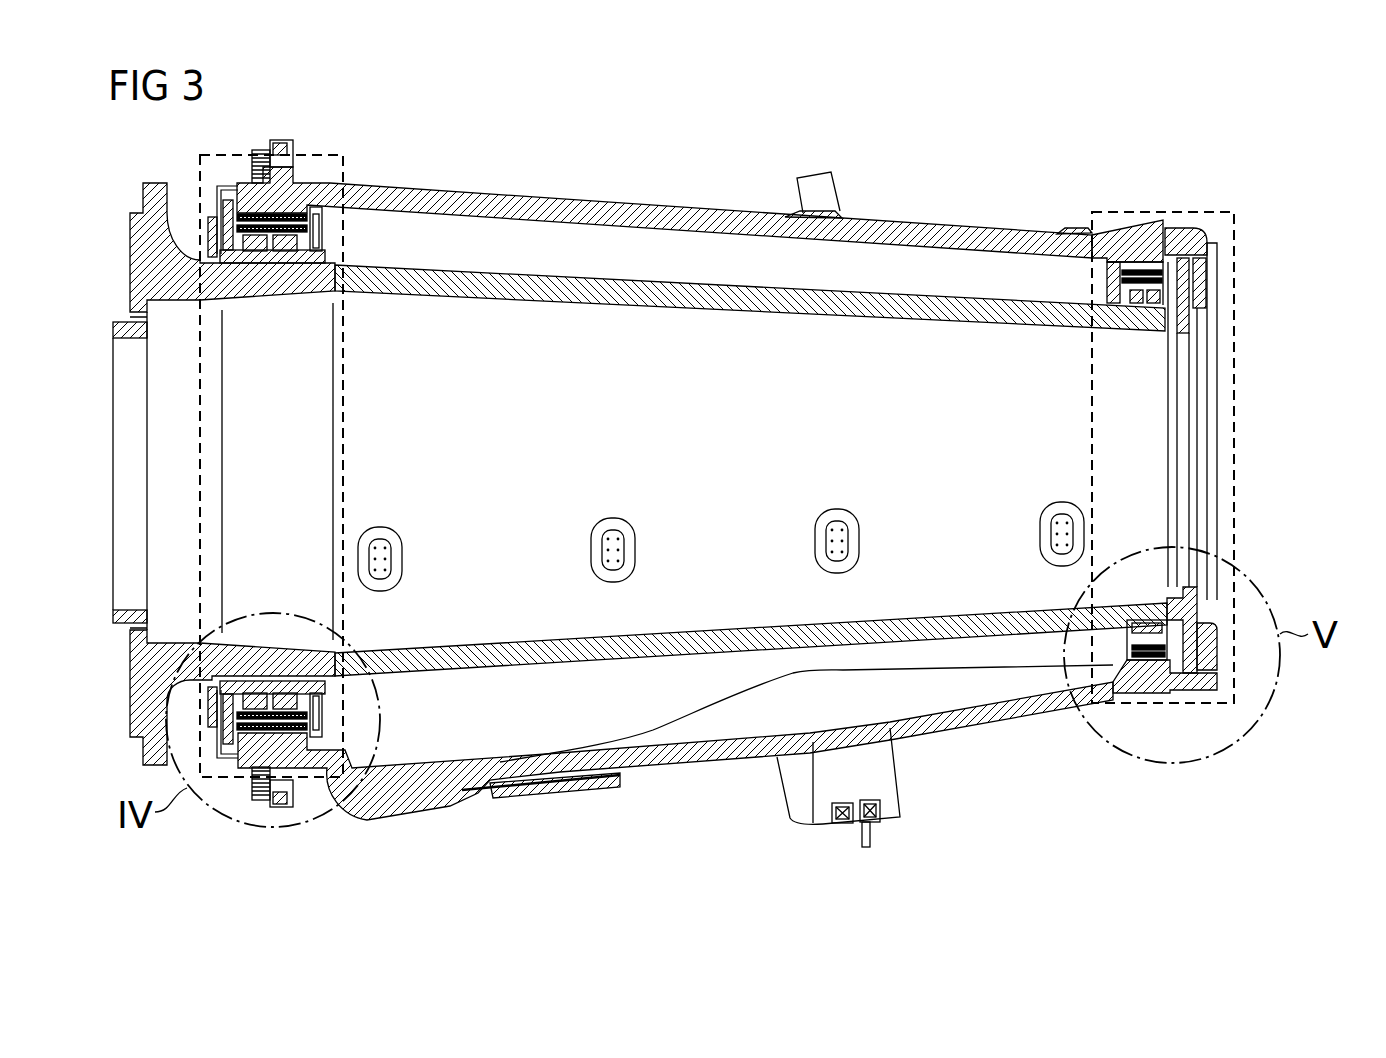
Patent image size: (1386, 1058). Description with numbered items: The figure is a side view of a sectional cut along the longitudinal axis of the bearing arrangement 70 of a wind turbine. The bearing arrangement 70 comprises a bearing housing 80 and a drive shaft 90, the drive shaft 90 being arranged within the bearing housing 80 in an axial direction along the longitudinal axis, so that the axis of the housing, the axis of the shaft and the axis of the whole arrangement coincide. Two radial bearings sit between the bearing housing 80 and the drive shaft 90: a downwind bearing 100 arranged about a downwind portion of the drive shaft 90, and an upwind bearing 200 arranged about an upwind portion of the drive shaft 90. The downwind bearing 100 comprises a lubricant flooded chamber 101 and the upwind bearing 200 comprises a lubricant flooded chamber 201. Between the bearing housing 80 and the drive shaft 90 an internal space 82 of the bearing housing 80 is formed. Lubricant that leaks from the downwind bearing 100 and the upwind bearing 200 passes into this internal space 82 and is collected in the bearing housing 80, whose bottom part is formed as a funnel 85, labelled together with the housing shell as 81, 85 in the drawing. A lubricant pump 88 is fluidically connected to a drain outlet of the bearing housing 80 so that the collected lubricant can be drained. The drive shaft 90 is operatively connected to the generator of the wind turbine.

The bearing arrangement 70 is at (888, 183).
The bearing housing 80 is at (754, 216).
The housing shell part 81 is at (675, 761).
The internal space 82 is at (933, 693).
The funnel 85 is at (649, 762).
The lubricant pump 88 is at (812, 795).
The drive shaft 90 is at (628, 298).
The downwind bearing 100 is at (1233, 460).
The lubricant flooded chamber 101 is at (1290, 368).
The upwind bearing 200 is at (246, 783).
The lubricant flooded chamber 201 is at (227, 795).